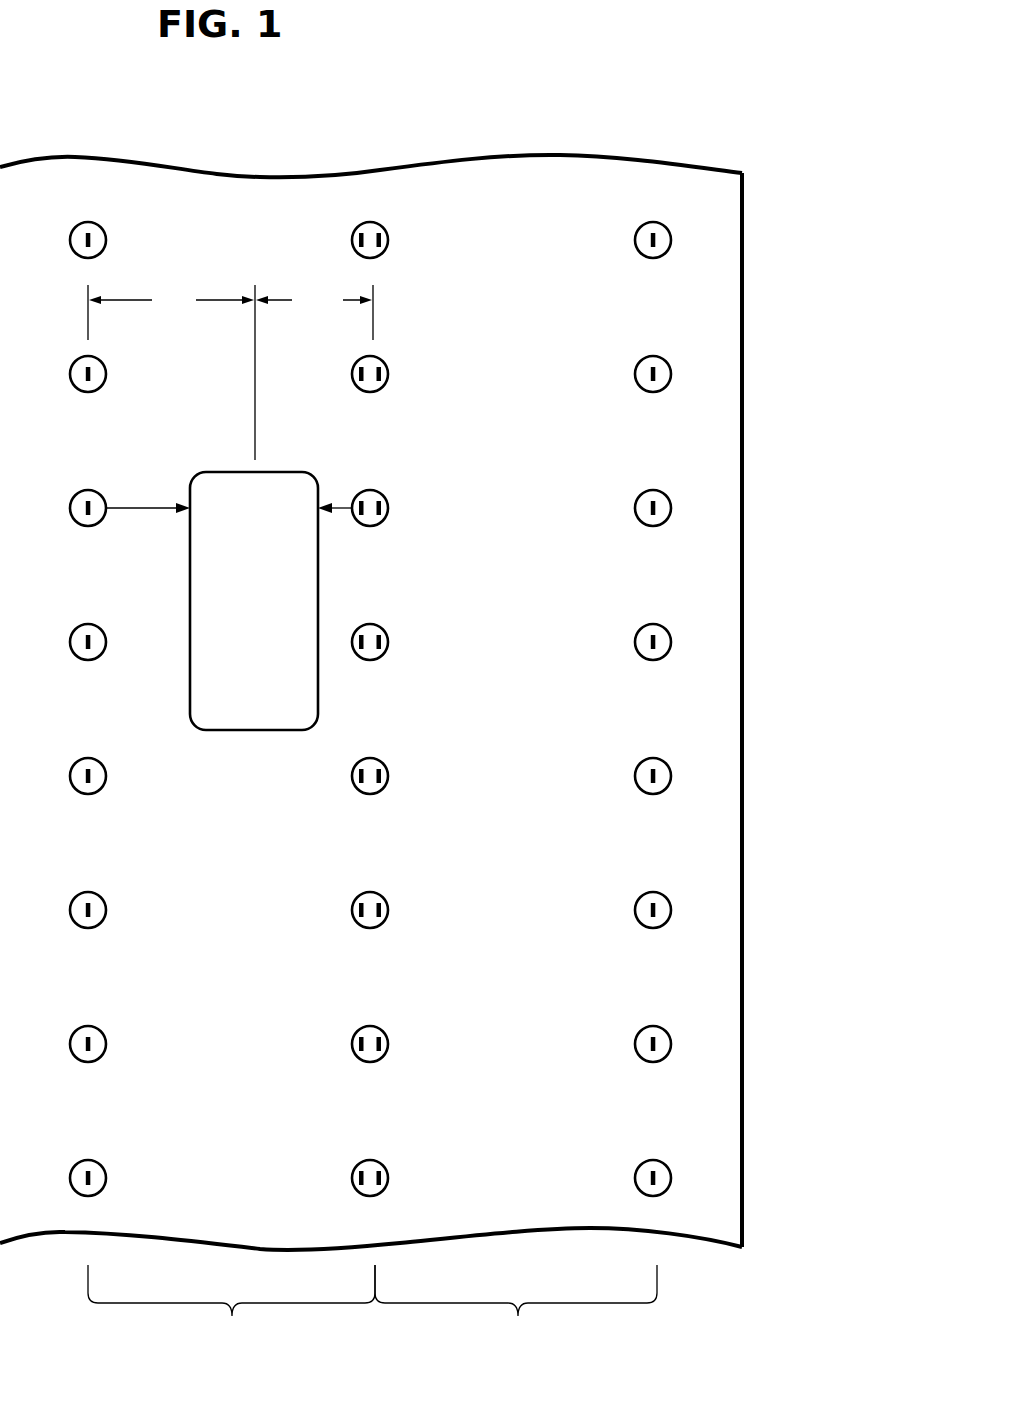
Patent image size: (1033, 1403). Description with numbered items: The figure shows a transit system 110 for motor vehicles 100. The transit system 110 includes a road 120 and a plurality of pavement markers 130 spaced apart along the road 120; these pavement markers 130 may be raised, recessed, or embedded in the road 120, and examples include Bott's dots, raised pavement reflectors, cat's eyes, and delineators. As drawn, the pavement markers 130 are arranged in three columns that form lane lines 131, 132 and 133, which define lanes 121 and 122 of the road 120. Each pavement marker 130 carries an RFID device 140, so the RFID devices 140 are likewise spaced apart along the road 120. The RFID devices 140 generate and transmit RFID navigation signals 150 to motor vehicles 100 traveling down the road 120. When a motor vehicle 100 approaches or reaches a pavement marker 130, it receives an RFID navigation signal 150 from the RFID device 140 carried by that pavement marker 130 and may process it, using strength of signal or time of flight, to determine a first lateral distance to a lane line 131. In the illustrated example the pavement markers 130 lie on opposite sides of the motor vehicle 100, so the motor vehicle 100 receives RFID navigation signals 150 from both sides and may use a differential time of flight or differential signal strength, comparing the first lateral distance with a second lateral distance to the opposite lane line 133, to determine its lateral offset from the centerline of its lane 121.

The motor vehicle 100 is at (272, 659).
The transit system 110 is at (790, 118).
The road 120 is at (742, 318).
The lane 121 is at (231, 792).
The lane 122 is at (516, 792).
The pavement marker 130 is at (638, 227).
The lane line 131 is at (88, 134).
The lane line 132 is at (642, 134).
The lane line 133 is at (367, 134).
The RFID device 140 is at (650, 241).
The RFID navigation signal 150 is at (152, 506).